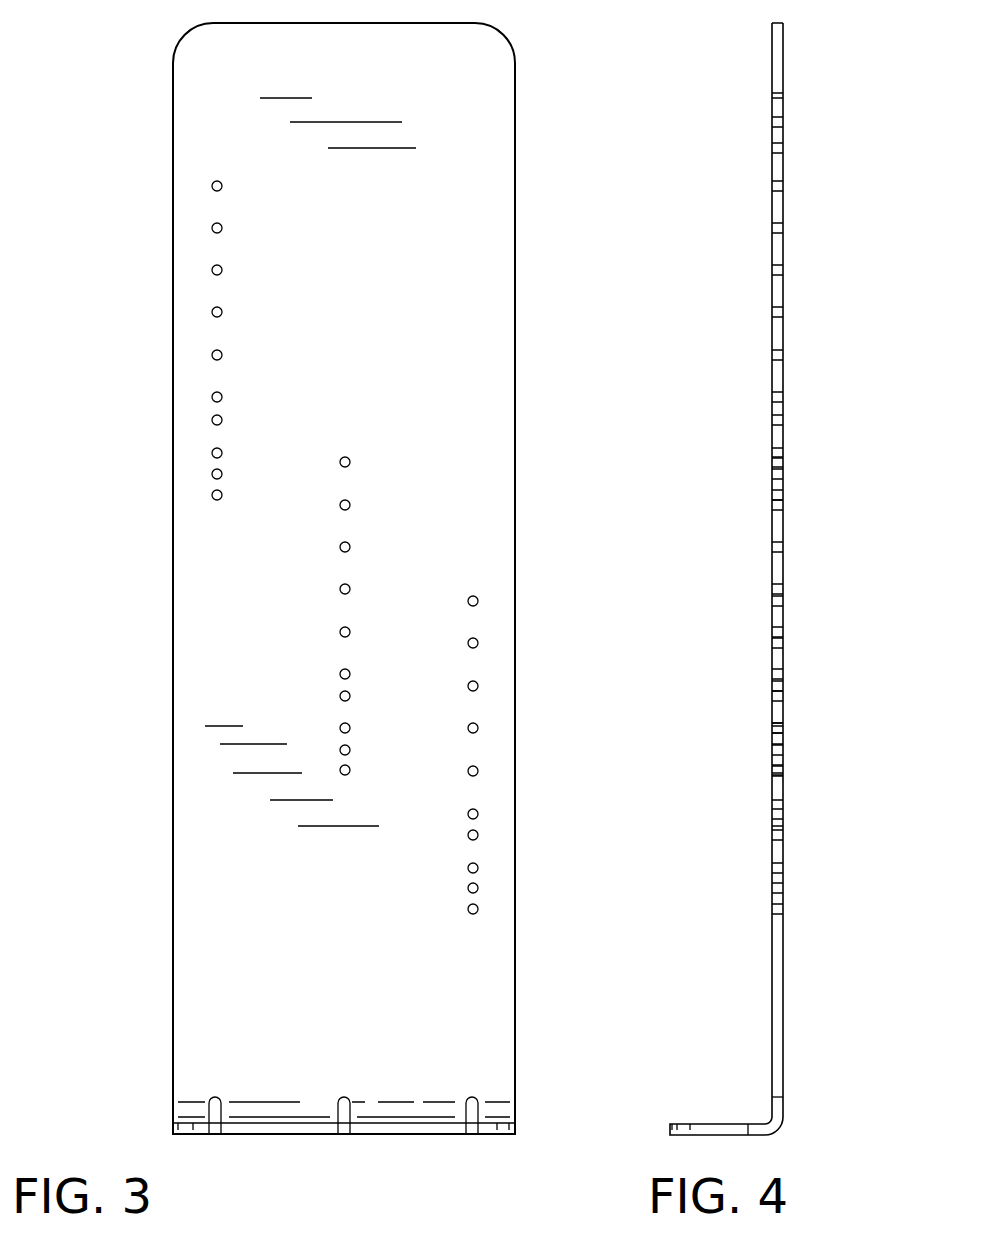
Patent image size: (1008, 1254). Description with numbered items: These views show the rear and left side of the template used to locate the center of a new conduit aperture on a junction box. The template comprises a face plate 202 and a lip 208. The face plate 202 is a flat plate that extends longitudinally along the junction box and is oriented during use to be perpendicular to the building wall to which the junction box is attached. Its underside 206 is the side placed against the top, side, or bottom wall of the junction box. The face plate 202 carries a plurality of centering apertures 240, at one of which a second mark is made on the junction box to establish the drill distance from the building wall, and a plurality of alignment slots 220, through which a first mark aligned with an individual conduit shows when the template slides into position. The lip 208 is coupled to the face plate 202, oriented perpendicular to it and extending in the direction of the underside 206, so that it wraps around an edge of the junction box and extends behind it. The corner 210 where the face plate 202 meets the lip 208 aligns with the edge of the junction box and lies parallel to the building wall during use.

In FIG. 3, the face plate 202 is at (486, 159).
In FIG. 4, the face plate 202 is at (784, 672).
In FIG. 3, the underside 206 is at (197, 809).
In FIG. 3, the plurality of centering apertures 240 is at (211, 495).
In FIG. 3, the plurality of alignment slots 220 is at (343, 1107).
In FIG. 3, the lip 208 is at (417, 1134).
In FIG. 4, the lip 208 is at (712, 1127).
In FIG. 4, the corner 210 is at (778, 1125).